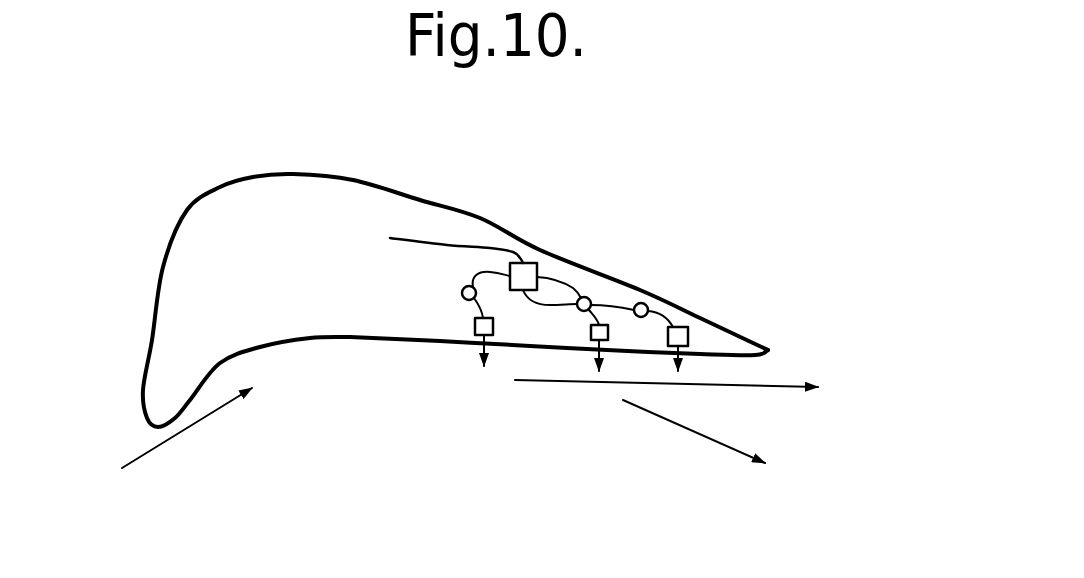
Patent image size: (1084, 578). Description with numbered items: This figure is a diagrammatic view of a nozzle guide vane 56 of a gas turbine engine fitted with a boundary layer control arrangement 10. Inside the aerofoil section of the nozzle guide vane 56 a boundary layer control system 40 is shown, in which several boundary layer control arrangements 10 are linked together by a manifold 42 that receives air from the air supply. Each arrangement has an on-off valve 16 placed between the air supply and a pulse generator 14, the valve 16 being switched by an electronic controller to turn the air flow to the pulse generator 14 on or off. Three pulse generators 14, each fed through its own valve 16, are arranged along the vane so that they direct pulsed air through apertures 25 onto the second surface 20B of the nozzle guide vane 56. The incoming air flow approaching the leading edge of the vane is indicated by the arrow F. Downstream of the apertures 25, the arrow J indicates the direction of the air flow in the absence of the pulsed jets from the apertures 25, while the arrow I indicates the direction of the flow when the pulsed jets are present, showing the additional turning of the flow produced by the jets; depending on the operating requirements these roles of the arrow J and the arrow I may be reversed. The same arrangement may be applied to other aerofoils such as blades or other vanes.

The nozzle guide vane 56 is at (257, 223).
The second surface 20B is at (313, 342).
The boundary layer control system 40 is at (482, 247).
The manifold 42 is at (532, 250).
The valve 16 is at (462, 292).
The pulse generator 14 is at (608, 328).
The boundary layer control arrangement 10 is at (465, 308).
The apertures 25 is at (478, 362).
The incoming flow direction F is at (173, 437).
The arrow J is at (772, 388).
The arrow I is at (702, 440).